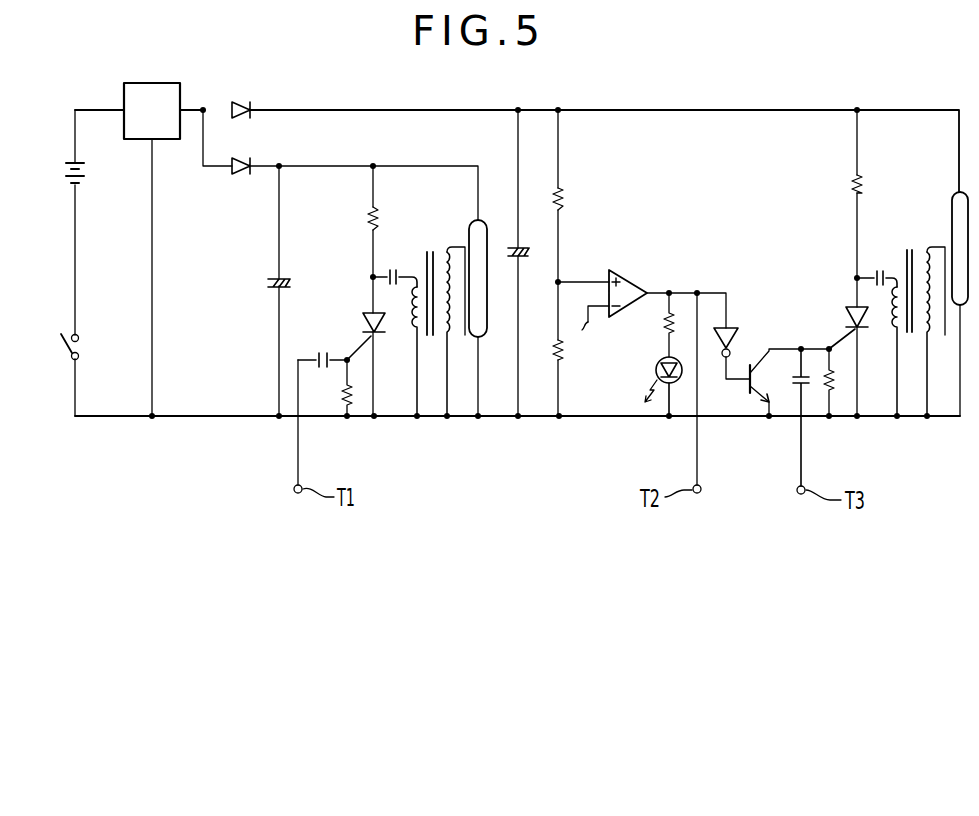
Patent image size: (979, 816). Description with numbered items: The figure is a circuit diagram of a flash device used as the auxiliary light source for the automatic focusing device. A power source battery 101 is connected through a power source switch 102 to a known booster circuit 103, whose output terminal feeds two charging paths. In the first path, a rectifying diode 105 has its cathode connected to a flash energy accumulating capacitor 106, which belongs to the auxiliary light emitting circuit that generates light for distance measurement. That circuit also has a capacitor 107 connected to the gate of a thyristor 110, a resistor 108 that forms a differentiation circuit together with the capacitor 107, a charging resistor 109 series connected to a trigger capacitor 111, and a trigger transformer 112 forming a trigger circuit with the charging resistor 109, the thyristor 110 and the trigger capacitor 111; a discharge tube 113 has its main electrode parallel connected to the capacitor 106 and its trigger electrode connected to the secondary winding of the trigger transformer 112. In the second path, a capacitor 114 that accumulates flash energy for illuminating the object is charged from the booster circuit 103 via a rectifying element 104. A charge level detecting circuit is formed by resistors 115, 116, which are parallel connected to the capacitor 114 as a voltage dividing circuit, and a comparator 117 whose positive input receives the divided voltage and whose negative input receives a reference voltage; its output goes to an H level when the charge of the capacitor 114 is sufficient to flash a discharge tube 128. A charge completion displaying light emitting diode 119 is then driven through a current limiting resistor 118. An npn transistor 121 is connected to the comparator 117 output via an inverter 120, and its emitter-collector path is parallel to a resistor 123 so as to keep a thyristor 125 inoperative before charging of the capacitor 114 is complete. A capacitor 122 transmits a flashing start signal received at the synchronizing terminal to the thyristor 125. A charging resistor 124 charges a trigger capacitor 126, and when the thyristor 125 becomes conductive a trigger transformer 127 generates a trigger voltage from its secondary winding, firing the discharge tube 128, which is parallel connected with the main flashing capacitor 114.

The power source battery 101 is at (88, 164).
The power source switch 102 is at (78, 347).
The booster circuit 103 is at (150, 83).
The rectifying diode 104 is at (240, 100).
The rectifying diode 105 is at (240, 176).
The flash energy accumulating capacitor 106 is at (268, 282).
The capacitor 107 is at (323, 350).
The resistor 108 is at (341, 397).
The charging resistor 109 is at (368, 219).
The thyristor 110 is at (382, 330).
The trigger capacitor 111 is at (395, 264).
The trigger transformer 112 is at (437, 250).
The discharge tube 113 is at (486, 228).
The capacitor 114 is at (508, 258).
The resistor 115 is at (565, 197).
The resistor 116 is at (552, 348).
The comparator 117 is at (630, 272).
The current limiting resistor 118 is at (665, 323).
The charge completion displaying light emitting diode 119 is at (655, 365).
The inverter 120 is at (734, 326).
The npn transistor 121 is at (755, 364).
The capacitor 122 is at (792, 386).
The resistor 123 is at (835, 386).
The charging resistor 124 is at (850, 186).
The thyristor 125 is at (846, 306).
The trigger capacitor 126 is at (877, 268).
The trigger transformer 127 is at (905, 250).
The discharge tube 128 is at (953, 197).